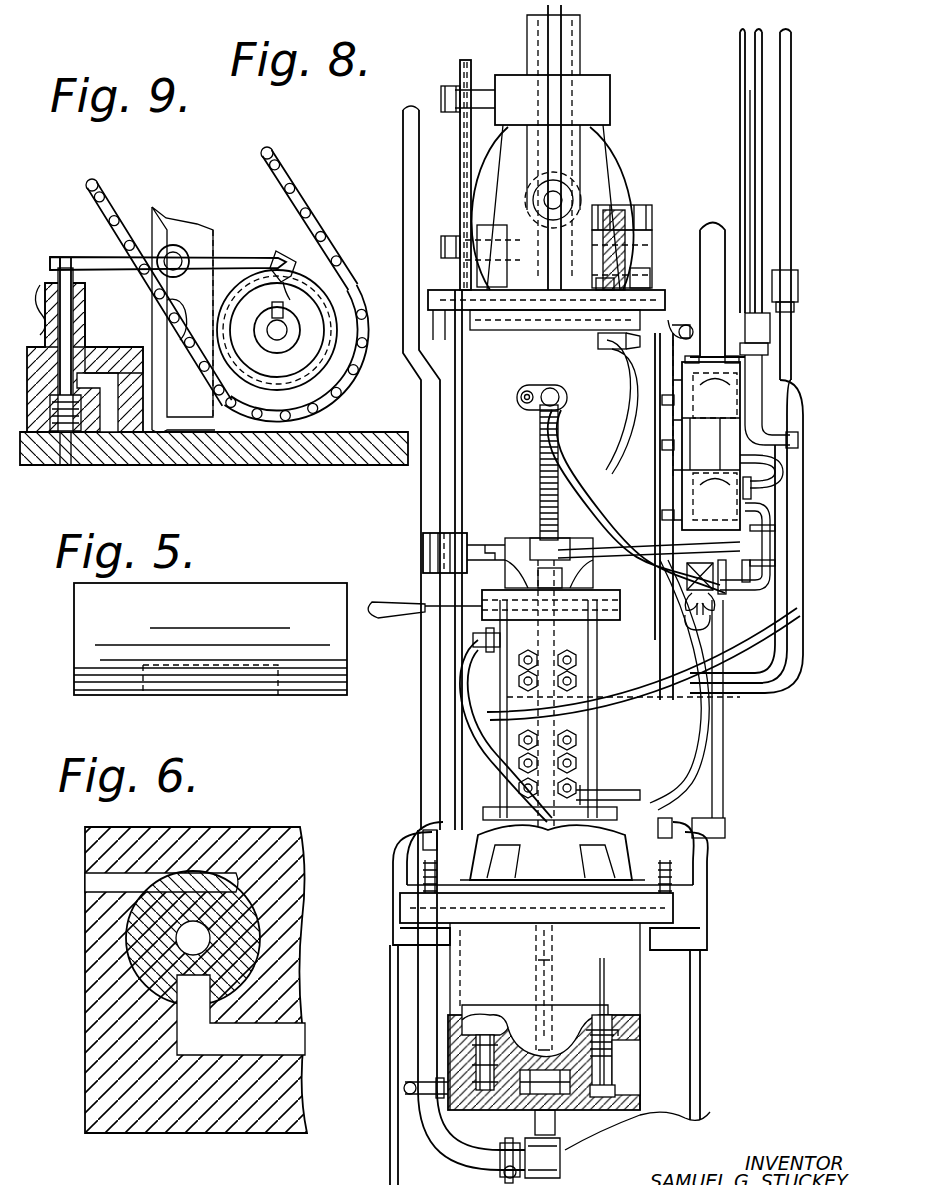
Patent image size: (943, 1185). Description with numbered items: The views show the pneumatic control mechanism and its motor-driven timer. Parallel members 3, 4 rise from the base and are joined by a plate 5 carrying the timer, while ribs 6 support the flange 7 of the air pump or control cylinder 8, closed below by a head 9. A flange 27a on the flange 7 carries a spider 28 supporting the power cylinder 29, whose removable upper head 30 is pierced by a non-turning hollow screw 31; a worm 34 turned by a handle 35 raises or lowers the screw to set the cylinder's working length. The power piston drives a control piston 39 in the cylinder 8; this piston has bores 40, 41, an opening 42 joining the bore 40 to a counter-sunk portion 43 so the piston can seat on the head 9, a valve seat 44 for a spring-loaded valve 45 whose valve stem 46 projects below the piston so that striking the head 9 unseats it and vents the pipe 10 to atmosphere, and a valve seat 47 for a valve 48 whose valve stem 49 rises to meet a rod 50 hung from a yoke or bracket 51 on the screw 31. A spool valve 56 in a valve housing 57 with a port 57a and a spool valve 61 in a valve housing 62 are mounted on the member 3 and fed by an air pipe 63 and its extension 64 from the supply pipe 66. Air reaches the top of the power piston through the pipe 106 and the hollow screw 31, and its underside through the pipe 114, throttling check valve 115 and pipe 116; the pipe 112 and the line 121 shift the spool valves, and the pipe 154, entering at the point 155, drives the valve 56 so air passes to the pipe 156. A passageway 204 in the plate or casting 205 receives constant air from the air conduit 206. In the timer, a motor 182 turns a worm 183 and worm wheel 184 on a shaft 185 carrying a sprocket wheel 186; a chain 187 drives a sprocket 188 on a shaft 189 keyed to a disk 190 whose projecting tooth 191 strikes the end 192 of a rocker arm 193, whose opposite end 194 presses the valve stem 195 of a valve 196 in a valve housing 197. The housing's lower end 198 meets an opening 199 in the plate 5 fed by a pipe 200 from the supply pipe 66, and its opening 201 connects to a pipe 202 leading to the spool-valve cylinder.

In FIG. 8, the member 3 is at (700, 980).
In FIG. 8, the member 4 is at (390, 998).
In FIG. 9, the plate 5 is at (252, 452).
In FIG. 8, the plate 5 is at (500, 313).
In FIG. 8, the ribs 6 is at (413, 937).
In FIG. 8, the flange 7 is at (420, 902).
In FIG. 8, the air pump or control cylinder 8 is at (450, 973).
In FIG. 8, the head 9 is at (655, 1118).
In FIG. 8, the pipe 10 is at (402, 218).
In FIG. 8, the flange 27a is at (423, 893).
In FIG. 8, the spider 28 is at (472, 840).
In FIG. 8, the air or power cylinder 29 is at (478, 762).
In FIG. 8, the removable upper head 30 is at (478, 597).
In FIG. 8, the hollow screw 31 is at (542, 498).
In FIG. 8, the worm 34 is at (537, 548).
In FIG. 8, the handle 35 is at (386, 614).
In FIG. 8, the control piston 39 is at (620, 1037).
In FIG. 8, the bore 40 is at (480, 1073).
In FIG. 8, the bore 41 is at (621, 1065).
In FIG. 8, the opening 42 is at (482, 1105).
In FIG. 8, the counter-sunk portion 43 is at (560, 1088).
In FIG. 8, the valve seat 44 is at (513, 1030).
In FIG. 8, the valve 45 is at (487, 1040).
In FIG. 8, the valve stem 46 is at (483, 1097).
In FIG. 8, the valve seat 47 is at (617, 1082).
In FIG. 8, the valve 48 is at (600, 1082).
In FIG. 8, the valve stem 49 is at (606, 978).
In FIG. 8, the rod 50 is at (606, 644).
In FIG. 8, the yoke or bracket 51 is at (593, 397).
In FIG. 5, the spool valve 56 is at (210, 639).
In FIG. 6, the spool valve 56 is at (148, 940).
In FIG. 8, the spool valve 56 is at (723, 387).
In FIG. 6, the valve housing 57 is at (130, 832).
In FIG. 8, the valve housing 57 is at (733, 397).
In FIG. 6, the port 57a is at (92, 878).
In FIG. 8, the spool valve 61 is at (751, 498).
In FIG. 8, the valve housing 62 is at (742, 534).
In FIG. 8, the air pipe 63 is at (677, 320).
In FIG. 8, the extension 64 is at (774, 443).
In FIG. 8, the supply pipe 66 is at (713, 230).
In FIG. 8, the pipe 106 is at (537, 434).
In FIG. 8, the pipe 112 is at (768, 690).
In FIG. 8, the pipe 114 is at (767, 552).
In FIG. 8, the throttling check valve 115 is at (718, 597).
In FIG. 8, the pipe 116 is at (703, 760).
In FIG. 8, the line 121 is at (795, 611).
In FIG. 8, the pipe 154 is at (760, 197).
In FIG. 8, the point 155 is at (745, 117).
In FIG. 8, the pipe 156 is at (792, 247).
In FIG. 8, the motor 182 is at (617, 183).
In FIG. 8, the worm 183 is at (580, 192).
In FIG. 8, the worm wheel 184 is at (570, 43).
In FIG. 8, the shaft 185 is at (485, 90).
In FIG. 8, the sprocket wheel 186 is at (462, 65).
In FIG. 9, the chain 187 is at (88, 190).
In FIG. 8, the chain 187 is at (468, 152).
In FIG. 9, the sprocket 188 is at (183, 412).
In FIG. 8, the sprocket 188 is at (465, 270).
In FIG. 9, the shaft 189 is at (277, 330).
In FIG. 8, the shaft 189 is at (505, 233).
In FIG. 9, the disk 190 is at (330, 352).
In FIG. 9, the projecting tooth 191 is at (294, 264).
In FIG. 9, the end 192 is at (267, 253).
In FIG. 9, the rocker arm 193 is at (197, 243).
In FIG. 9, the opposite end 194 is at (78, 262).
In FIG. 8, the opposite end 194 is at (608, 201).
In FIG. 9, the valve stem 195 is at (68, 304).
In FIG. 8, the valve stem 195 is at (618, 231).
In FIG. 9, the valve 196 is at (92, 370).
In FIG. 8, the valve 196 is at (626, 276).
In FIG. 9, the valve housing 197 is at (42, 327).
In FIG. 8, the valve housing 197 is at (624, 258).
In FIG. 9, the lower end 198 is at (40, 432).
In FIG. 8, the lower end 198 is at (606, 283).
In FIG. 9, the opening 199 is at (67, 452).
In FIG. 8, the opening 199 is at (590, 309).
In FIG. 8, the pipe 200 is at (598, 340).
In FIG. 9, the opening 201 is at (120, 413).
In FIG. 8, the pipe 202 is at (610, 358).
In FIG. 8, the passageway 204 is at (477, 632).
In FIG. 8, the plate or casting 205 is at (520, 710).
In FIG. 8, the air conduit 206 is at (580, 552).